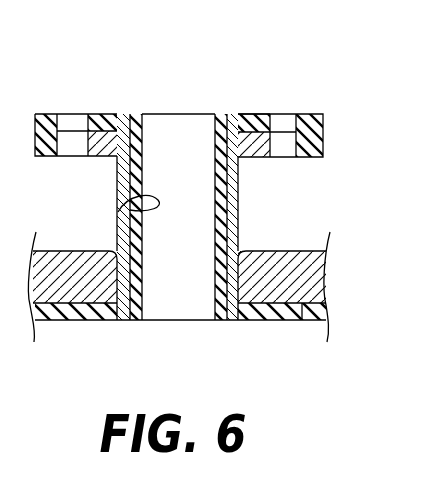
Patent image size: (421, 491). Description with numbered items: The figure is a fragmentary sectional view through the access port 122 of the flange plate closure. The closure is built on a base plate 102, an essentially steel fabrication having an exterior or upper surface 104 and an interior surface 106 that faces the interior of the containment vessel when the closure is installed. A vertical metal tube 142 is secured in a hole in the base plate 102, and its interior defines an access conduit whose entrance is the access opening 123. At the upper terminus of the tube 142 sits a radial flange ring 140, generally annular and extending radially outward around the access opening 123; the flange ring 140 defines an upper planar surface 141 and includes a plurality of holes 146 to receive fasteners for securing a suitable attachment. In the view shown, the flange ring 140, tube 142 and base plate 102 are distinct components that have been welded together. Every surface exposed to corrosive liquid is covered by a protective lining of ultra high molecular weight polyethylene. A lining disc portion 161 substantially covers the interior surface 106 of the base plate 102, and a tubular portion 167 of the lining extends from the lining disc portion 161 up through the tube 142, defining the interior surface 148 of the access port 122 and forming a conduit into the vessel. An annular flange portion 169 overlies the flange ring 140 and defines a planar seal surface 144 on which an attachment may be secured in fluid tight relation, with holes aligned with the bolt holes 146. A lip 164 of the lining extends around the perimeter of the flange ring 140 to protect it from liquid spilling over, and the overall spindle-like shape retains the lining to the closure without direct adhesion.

The base plate 102 is at (318, 258).
The exterior or upper surface 104 is at (283, 250).
The interior surface 106 is at (305, 324).
The access port 122 is at (285, 74).
The access opening 123 is at (165, 128).
The flange ring 140 is at (98, 156).
The upper planar surface 141 is at (248, 118).
The vertical metal tube 142 is at (243, 182).
The planar seal surface 144 is at (118, 114).
The holes 146 is at (71, 155).
The interior surface of the access port 148 is at (118, 222).
The lining disc portion 161 is at (248, 325).
The lip 164 is at (340, 114).
The tubular portion 167 is at (215, 282).
The annular flange portion 169 is at (247, 118).